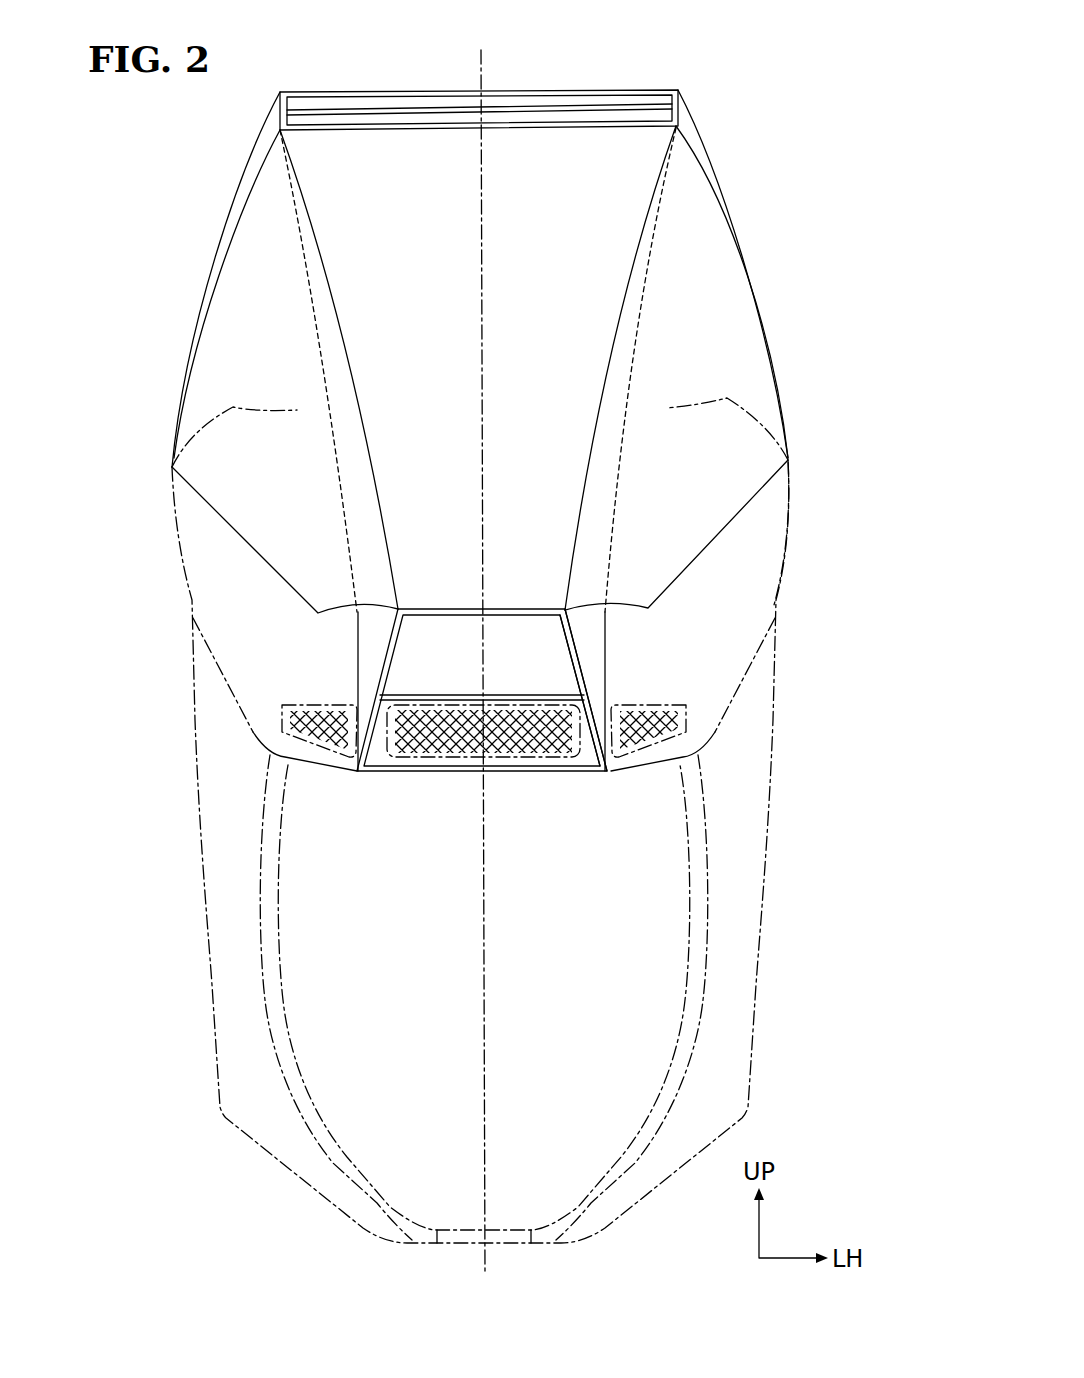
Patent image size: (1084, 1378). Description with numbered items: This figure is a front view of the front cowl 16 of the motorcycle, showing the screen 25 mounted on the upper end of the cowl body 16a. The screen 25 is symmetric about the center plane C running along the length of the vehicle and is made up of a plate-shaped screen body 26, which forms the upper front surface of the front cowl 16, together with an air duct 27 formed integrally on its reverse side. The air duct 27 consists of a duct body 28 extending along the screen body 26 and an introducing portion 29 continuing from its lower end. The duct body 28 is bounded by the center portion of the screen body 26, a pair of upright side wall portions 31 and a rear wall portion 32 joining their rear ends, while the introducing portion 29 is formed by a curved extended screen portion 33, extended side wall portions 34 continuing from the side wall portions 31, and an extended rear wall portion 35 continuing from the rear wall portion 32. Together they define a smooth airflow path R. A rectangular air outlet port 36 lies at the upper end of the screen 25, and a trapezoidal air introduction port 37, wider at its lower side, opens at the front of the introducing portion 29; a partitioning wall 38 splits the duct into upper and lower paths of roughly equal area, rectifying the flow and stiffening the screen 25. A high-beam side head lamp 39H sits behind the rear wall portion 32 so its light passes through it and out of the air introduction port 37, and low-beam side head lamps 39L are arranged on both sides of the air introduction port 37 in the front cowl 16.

The front cowl 16 is at (536, 768).
The cowl body 16a is at (785, 537).
The screen 25 is at (732, 156).
The screen body 26 is at (544, 368).
The air duct 27 is at (590, 449).
The duct body 28 is at (587, 370).
The introducing portion 29 is at (594, 662).
The side wall portions 31 is at (365, 489).
The rear wall portion 32 is at (560, 507).
The extended screen portion 33 is at (545, 590).
The extended side wall portions 34 is at (365, 650).
The extended rear wall portion 35 is at (575, 773).
The air outlet port 36 is at (626, 112).
The air introduction port 37 is at (533, 760).
The partitioning wall 38 is at (545, 695).
The high-beam side head lamp 39H is at (428, 757).
The low-beam side head lamps 39L is at (282, 730).
The center plane C is at (478, 80).
The airflow path R is at (573, 368).